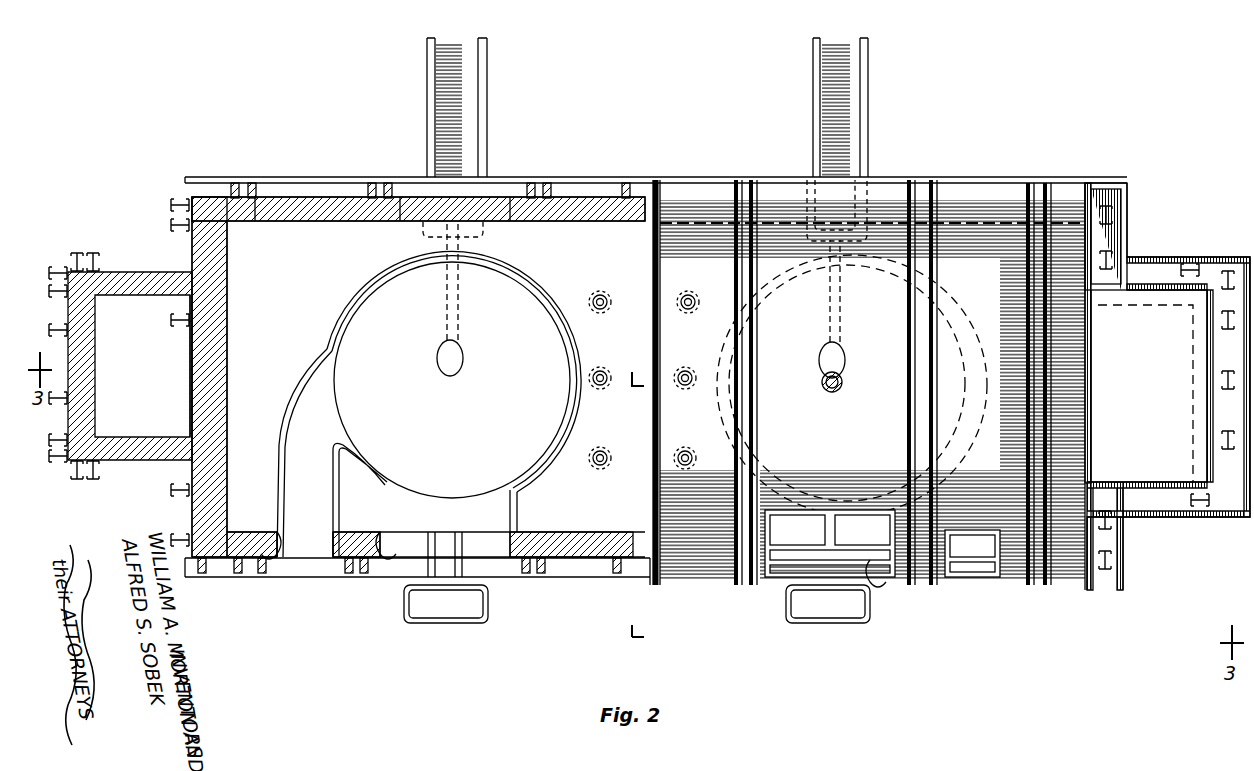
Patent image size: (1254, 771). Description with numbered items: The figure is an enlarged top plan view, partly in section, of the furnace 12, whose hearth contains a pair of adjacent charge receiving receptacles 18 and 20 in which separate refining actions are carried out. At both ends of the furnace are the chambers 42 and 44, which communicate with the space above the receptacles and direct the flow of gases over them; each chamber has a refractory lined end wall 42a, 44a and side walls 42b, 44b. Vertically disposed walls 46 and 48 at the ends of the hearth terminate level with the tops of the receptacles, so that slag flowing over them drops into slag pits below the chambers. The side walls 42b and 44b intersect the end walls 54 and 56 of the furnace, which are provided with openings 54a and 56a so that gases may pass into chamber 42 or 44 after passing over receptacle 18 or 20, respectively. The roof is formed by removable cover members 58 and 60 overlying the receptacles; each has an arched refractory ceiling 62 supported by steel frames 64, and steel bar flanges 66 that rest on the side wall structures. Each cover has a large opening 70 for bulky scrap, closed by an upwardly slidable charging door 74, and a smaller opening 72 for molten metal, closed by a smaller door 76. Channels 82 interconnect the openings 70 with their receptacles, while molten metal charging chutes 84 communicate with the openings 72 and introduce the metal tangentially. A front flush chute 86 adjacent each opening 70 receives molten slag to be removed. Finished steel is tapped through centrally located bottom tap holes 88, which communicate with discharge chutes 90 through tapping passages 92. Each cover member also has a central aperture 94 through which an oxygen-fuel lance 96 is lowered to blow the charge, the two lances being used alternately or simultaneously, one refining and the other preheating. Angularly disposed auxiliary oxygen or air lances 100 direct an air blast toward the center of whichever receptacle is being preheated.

The furnace 12 is at (676, 621).
The charge receiving receptacle 18 is at (528, 306).
The charge receiving receptacle 20 is at (786, 282).
The chamber 42 is at (146, 368).
The end wall 42a is at (111, 280).
The side wall 42b is at (150, 296).
The chamber 44 is at (1143, 327).
The end wall 44a is at (1184, 510).
The side wall 44b is at (1135, 275).
The vertically disposed wall 46 is at (194, 408).
The vertically disposed wall 48 is at (1110, 409).
The end wall of the furnace 54 is at (228, 254).
The opening 54a is at (198, 298).
The end wall of the furnace 56 is at (1064, 232).
The opening 56a is at (1082, 300).
The removable cover member 58 is at (514, 562).
The removable cover member 60 is at (820, 483).
The arched ceiling 62 is at (510, 201).
The steel frame 64 is at (252, 182).
The steel bar flange 66 is at (664, 182).
The large opening 70 is at (378, 567).
The smaller opening 72 is at (282, 564).
The charging door 74 is at (768, 574).
The smaller door 76 is at (966, 576).
The channel 82 is at (506, 510).
The molten metal charging chute 84 is at (270, 448).
The front flush chute 86 is at (437, 623).
The bottom tap hole 88 is at (466, 372).
The discharge chute 90 is at (463, 50).
The tapping passage 92 is at (460, 300).
The central aperture 94 is at (822, 391).
The oxygen-fuel lance 96 is at (842, 388).
The oxygen or air lance 100 is at (606, 368).